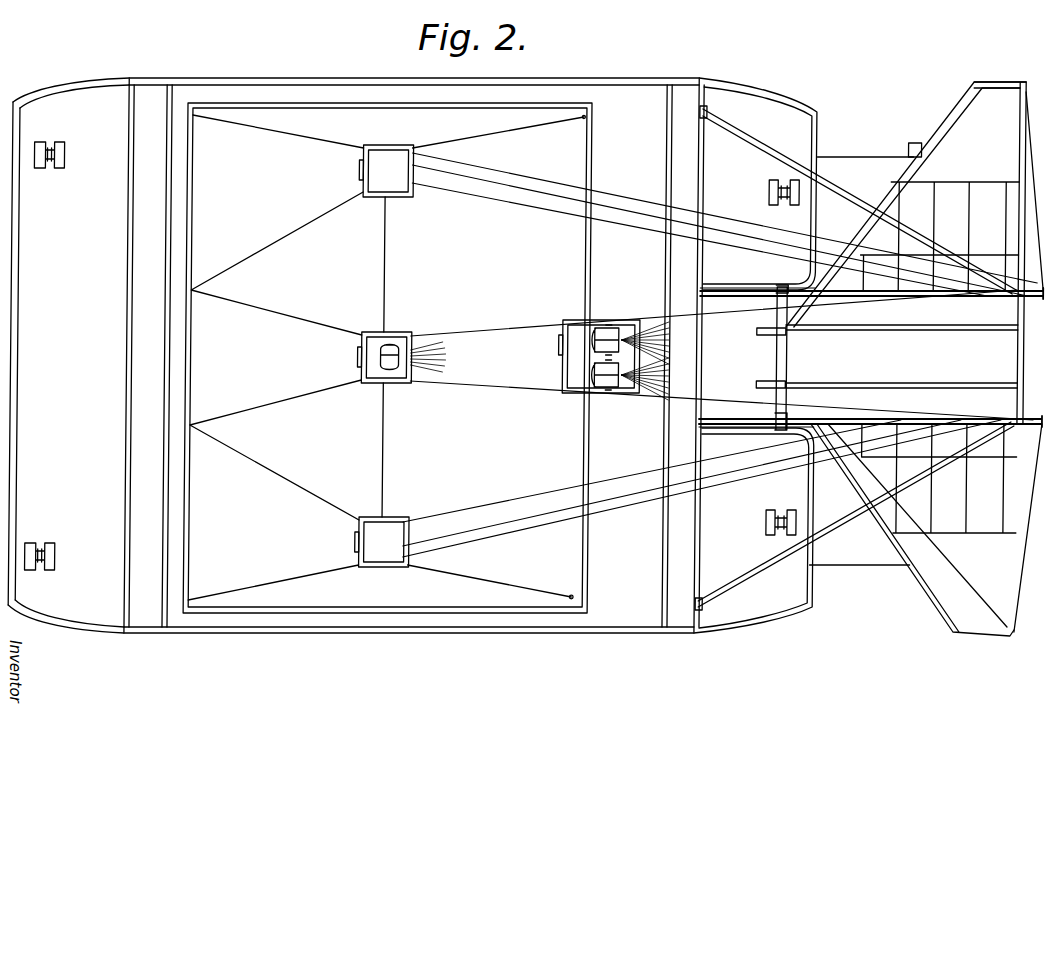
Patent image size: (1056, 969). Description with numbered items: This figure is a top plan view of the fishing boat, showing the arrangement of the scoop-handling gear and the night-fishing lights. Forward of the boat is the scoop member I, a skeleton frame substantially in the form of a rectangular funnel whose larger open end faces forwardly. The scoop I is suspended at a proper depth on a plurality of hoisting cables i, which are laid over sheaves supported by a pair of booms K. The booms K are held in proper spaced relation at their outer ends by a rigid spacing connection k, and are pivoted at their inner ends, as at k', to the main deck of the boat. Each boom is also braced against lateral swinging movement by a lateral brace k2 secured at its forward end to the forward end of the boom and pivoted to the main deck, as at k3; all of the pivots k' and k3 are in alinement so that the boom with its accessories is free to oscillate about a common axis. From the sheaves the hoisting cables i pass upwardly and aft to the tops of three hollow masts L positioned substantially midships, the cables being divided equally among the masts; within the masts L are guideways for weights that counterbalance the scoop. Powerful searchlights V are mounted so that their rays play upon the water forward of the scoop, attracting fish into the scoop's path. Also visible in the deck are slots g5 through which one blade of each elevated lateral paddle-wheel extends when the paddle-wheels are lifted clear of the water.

The slot g5 is at (60, 168).
The hollow mast L is at (403, 197).
The hoisting cable i is at (532, 186).
The searchlight V is at (393, 347).
The pivot k' is at (723, 359).
The boom K is at (740, 270).
The lateral brace k2 is at (760, 130).
The pivot k3 is at (704, 106).
The rigid spacing connection k is at (1009, 253).
The scoop member I is at (985, 634).